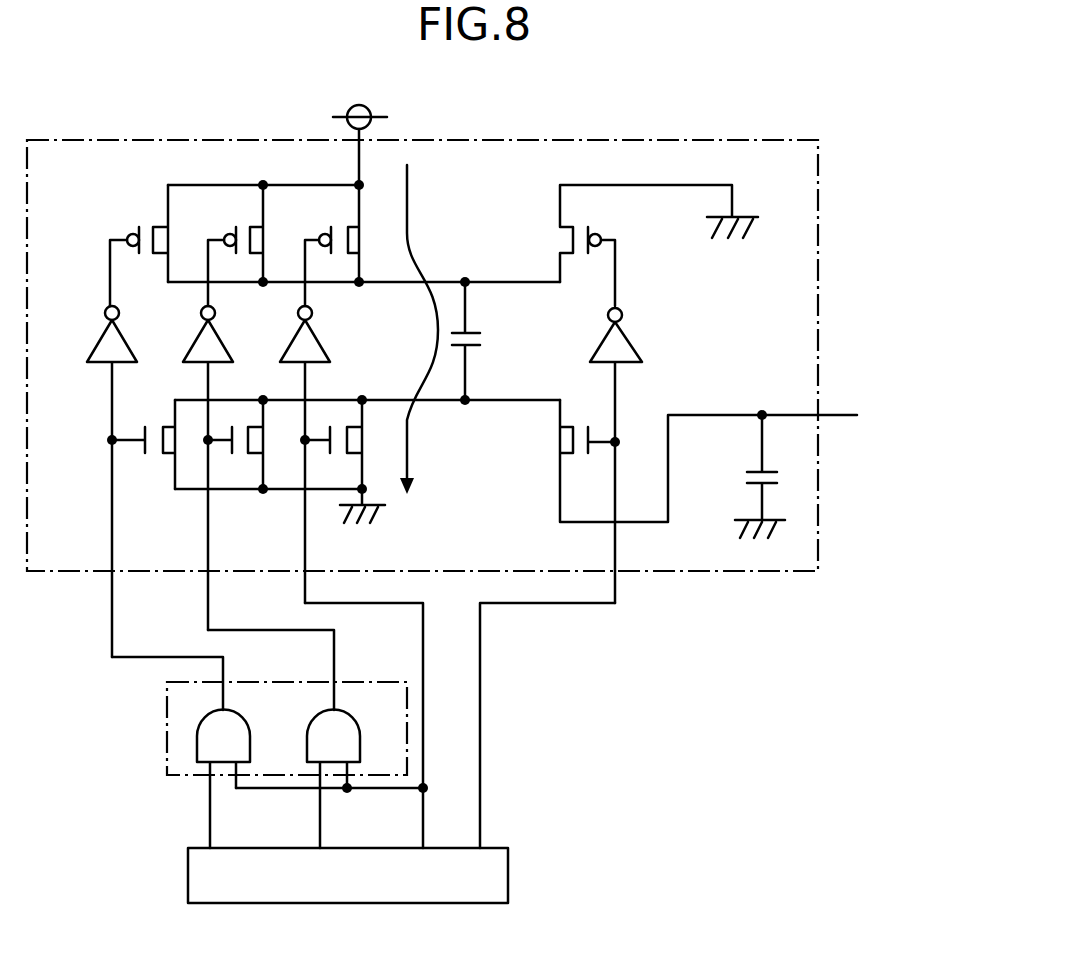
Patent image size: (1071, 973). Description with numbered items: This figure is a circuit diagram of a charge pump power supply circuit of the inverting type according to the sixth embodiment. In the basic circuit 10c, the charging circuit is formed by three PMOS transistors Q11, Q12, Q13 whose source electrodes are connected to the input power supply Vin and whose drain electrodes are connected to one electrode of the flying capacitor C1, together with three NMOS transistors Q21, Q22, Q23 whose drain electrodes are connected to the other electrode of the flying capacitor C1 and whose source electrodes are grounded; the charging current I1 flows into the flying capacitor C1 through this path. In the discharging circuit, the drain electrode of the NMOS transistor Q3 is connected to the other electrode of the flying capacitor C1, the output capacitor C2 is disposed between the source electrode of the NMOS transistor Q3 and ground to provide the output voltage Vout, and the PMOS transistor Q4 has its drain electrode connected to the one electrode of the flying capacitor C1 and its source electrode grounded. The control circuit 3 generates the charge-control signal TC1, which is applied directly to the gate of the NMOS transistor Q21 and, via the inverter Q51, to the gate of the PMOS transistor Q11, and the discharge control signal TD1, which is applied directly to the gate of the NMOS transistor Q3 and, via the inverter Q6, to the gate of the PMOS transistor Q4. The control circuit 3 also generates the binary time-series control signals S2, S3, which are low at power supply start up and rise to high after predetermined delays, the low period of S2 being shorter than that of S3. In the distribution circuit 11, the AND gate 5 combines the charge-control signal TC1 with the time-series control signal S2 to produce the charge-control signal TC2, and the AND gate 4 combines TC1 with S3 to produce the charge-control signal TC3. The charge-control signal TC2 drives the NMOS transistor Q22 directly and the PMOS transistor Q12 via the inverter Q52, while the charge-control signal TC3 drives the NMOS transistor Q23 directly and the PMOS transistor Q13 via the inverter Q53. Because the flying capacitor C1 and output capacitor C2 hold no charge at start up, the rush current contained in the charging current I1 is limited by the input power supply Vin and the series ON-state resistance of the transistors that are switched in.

The basic circuit 10c is at (516, 140).
The control circuit 3 is at (508, 868).
The AND gate 4 is at (243, 716).
The AND gate 5 is at (354, 716).
The distribution circuit 11 is at (268, 765).
The PMOS transistor Q11 is at (332, 245).
The PMOS transistor Q12 is at (235, 245).
The PMOS transistor Q13 is at (139, 245).
The NMOS transistor Q21 is at (374, 461).
The NMOS transistor Q22 is at (246, 465).
The NMOS transistor Q23 is at (143, 448).
The NMOS transistor Q3 is at (689, 461).
The PMOS transistor Q4 is at (659, 245).
The inverter Q51 is at (290, 454).
The inverter Q52 is at (192, 468).
The inverter Q53 is at (97, 481).
The inverter Q6 is at (630, 455).
The flying capacitor C1 is at (449, 341).
The output capacitor C2 is at (748, 476).
The input power supply Vin is at (360, 126).
The output voltage Vout is at (891, 416).
The charging current I1 is at (421, 329).
The charge-control signal TC1 is at (364, 712).
The charge-control signal TC2 is at (271, 657).
The charge-control signal TC3 is at (167, 669).
The discharge control signal TD1 is at (547, 712).
The time-series control signal S2 is at (293, 834).
The time-series control signal S3 is at (185, 834).